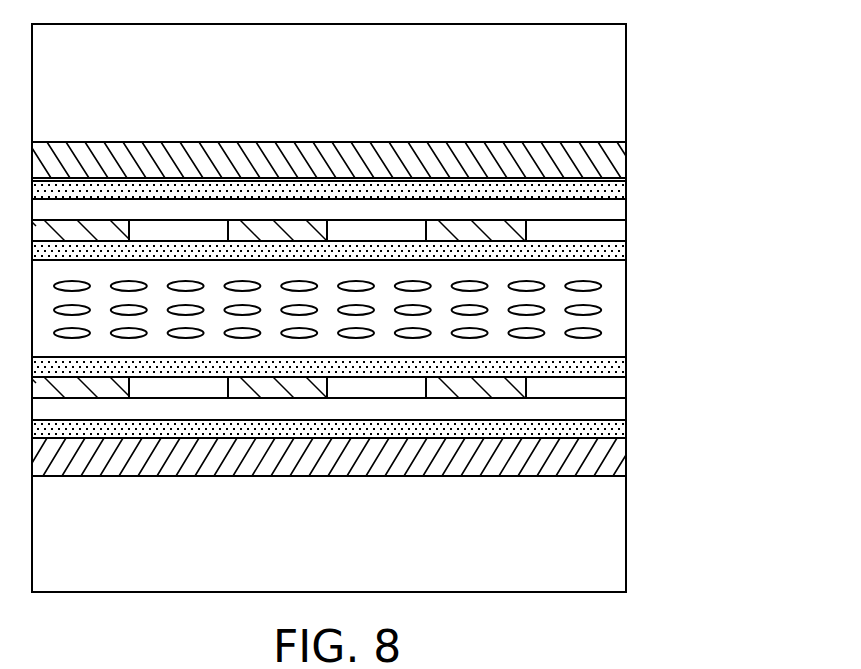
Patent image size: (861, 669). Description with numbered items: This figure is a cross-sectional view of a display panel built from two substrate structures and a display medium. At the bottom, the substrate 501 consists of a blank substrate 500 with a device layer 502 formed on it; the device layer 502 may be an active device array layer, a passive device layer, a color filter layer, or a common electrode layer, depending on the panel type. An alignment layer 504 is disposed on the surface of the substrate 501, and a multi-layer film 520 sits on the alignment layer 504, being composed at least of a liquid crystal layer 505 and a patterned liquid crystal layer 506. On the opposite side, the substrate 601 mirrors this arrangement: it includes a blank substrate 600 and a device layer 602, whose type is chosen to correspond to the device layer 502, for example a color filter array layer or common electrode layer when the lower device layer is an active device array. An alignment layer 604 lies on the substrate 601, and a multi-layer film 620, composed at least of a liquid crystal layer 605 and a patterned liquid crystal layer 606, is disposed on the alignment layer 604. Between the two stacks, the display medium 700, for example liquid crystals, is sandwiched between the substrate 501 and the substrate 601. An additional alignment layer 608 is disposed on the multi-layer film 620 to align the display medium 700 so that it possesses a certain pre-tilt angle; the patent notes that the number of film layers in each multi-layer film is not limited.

The blank substrate 600 is at (614, 123).
The device layer 602 is at (614, 155).
The substrate 601 is at (719, 88).
The alignment layer 604 is at (622, 183).
The liquid crystal layer 605 is at (614, 227).
The patterned liquid crystal layer 606 is at (614, 253).
The multi-layer film 620 is at (707, 220).
The alignment layer 608 is at (614, 262).
The display medium 700 is at (616, 323).
The patterned liquid crystal layer 506 is at (612, 387).
The liquid crystal layer 505 is at (612, 408).
The multi-layer film 520 is at (707, 347).
The alignment layer 504 is at (612, 430).
The device layer 502 is at (614, 460).
The blank substrate 500 is at (612, 492).
The substrate 501 is at (717, 430).